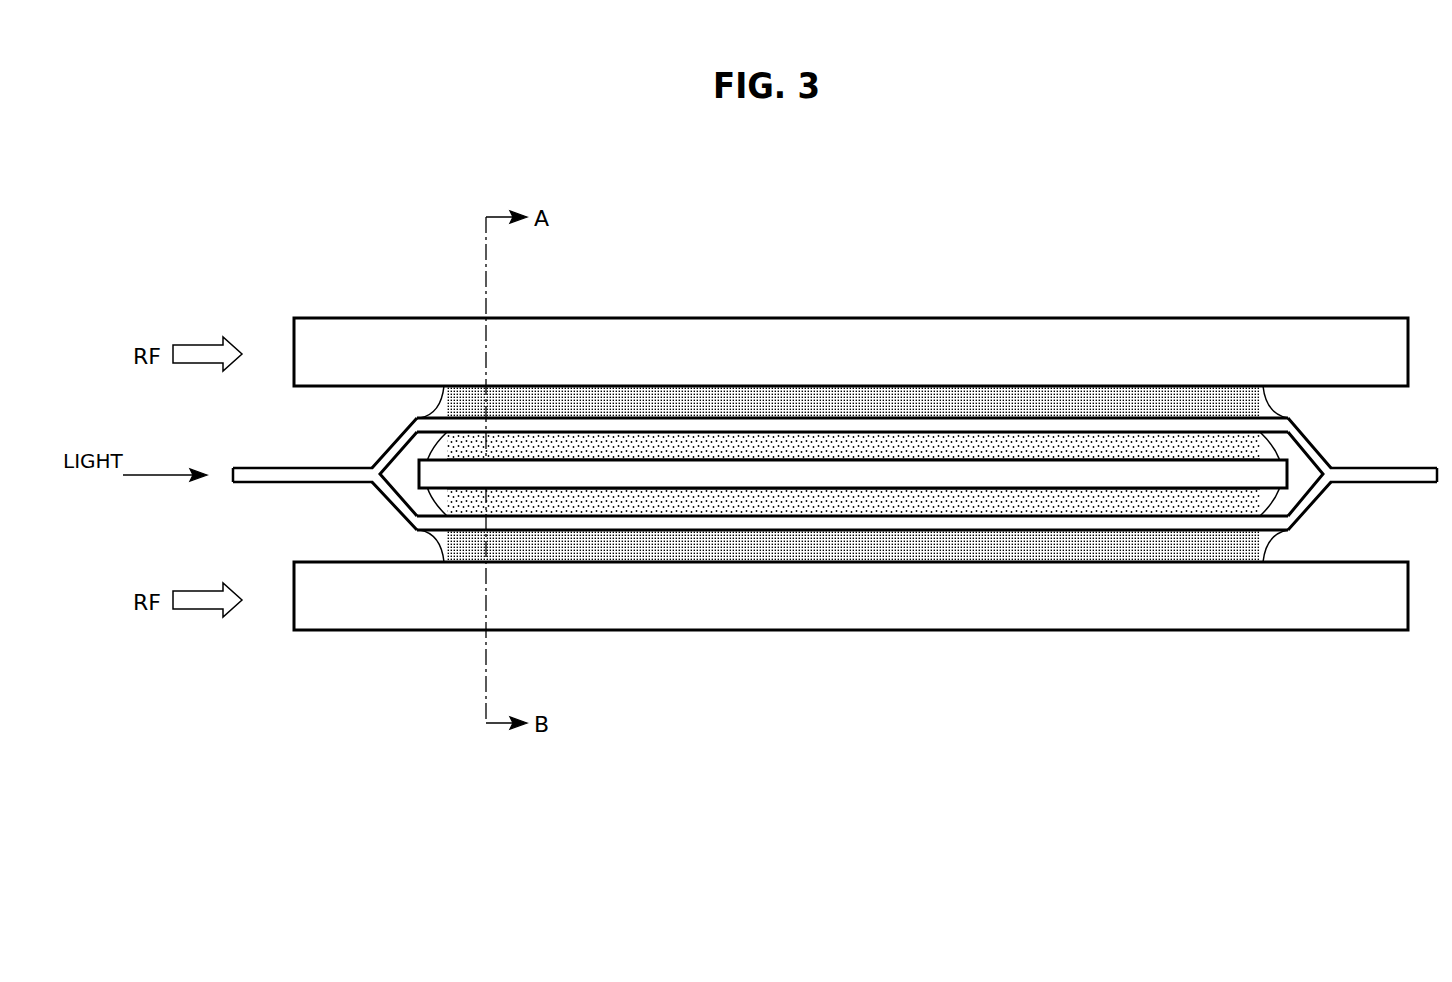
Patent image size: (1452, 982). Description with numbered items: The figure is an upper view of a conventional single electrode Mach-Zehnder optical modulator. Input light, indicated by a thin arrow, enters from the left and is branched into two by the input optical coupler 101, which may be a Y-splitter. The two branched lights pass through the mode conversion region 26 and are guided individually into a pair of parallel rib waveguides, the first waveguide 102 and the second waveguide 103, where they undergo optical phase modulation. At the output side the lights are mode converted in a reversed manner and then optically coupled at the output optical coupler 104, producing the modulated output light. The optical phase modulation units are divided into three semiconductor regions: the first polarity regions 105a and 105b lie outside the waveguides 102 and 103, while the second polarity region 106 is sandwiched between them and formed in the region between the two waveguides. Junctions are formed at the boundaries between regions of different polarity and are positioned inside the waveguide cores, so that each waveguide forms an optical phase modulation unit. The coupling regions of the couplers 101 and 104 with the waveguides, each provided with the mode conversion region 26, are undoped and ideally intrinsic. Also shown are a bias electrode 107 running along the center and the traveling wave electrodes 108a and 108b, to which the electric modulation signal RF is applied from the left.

The mode conversion region 26 is at (437, 400).
The input optical coupler 101 is at (370, 463).
The first waveguide 102 is at (668, 430).
The second waveguide 103 is at (737, 518).
The output optical coupler 104 is at (1332, 466).
The first polarity region 105a is at (741, 396).
The first polarity region 105b is at (810, 538).
The second polarity region 106 is at (823, 507).
The bias electrode 107 is at (1150, 475).
The traveling wave electrode 108a is at (963, 350).
The traveling wave electrode 108b is at (972, 596).